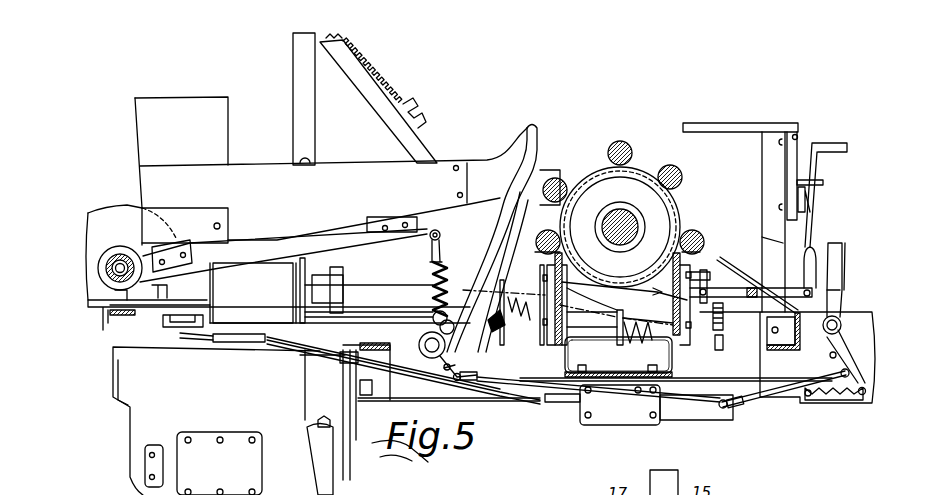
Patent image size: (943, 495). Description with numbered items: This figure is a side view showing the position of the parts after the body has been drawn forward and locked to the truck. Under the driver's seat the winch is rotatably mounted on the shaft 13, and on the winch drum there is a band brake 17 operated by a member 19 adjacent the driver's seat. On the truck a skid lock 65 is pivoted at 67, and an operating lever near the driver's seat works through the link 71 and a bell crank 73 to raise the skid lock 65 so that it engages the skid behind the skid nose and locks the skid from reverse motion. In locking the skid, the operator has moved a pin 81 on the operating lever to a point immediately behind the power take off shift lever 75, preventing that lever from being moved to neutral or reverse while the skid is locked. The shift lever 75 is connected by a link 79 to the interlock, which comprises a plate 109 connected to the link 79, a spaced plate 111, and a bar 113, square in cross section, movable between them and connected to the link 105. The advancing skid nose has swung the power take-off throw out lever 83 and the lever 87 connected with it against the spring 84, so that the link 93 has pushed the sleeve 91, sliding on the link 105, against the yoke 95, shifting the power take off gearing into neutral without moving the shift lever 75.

The shaft 13 is at (623, 222).
The band brake 17 is at (677, 215).
The brake operating member 19 is at (818, 165).
The skid lock 65 is at (353, 237).
The skid lock pivot 67 is at (117, 253).
The link 71 is at (533, 379).
The bell crank 73 is at (433, 320).
The power take off shift lever 75 is at (837, 303).
The link 79 is at (760, 400).
The pin 81 is at (833, 358).
The power take-off throw out lever 83 is at (532, 155).
The spring 84 is at (533, 292).
The lever 87 is at (468, 354).
The sleeve 91 is at (232, 348).
The link 93 is at (337, 361).
The yoke 95 is at (205, 339).
The link 105 is at (320, 353).
The plate 109 is at (703, 409).
The plate 111 is at (622, 414).
The bar 113 is at (558, 401).